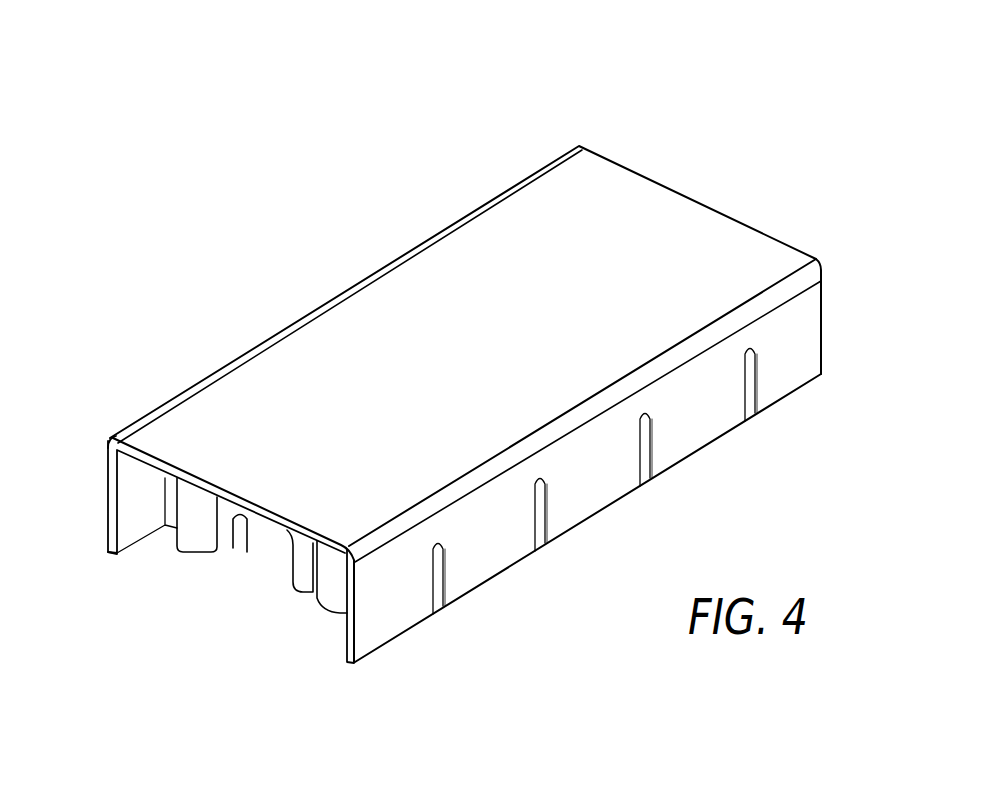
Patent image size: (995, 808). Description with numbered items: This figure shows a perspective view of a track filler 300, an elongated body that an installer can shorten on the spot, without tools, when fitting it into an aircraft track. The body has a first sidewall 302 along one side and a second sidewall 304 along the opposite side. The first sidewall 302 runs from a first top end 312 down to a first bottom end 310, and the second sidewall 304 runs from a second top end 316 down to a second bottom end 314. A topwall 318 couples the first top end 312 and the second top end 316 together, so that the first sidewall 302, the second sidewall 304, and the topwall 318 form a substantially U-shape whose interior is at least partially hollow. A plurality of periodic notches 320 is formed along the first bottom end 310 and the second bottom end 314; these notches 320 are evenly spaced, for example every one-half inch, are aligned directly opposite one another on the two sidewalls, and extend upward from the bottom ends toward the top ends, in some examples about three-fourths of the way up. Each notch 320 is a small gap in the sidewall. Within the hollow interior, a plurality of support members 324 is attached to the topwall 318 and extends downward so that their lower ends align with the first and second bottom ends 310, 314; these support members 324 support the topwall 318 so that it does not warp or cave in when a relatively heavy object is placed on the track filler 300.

The track filler 300 is at (750, 127).
The first sidewall 302 is at (107, 483).
The second sidewall 304 is at (703, 362).
The first bottom end 310 is at (110, 537).
The first top end 312 is at (110, 437).
The second bottom end 314 is at (353, 666).
The second top end 316 is at (346, 558).
The topwall 318 is at (388, 296).
The notches 320 is at (442, 578).
The support members 324 is at (198, 530).